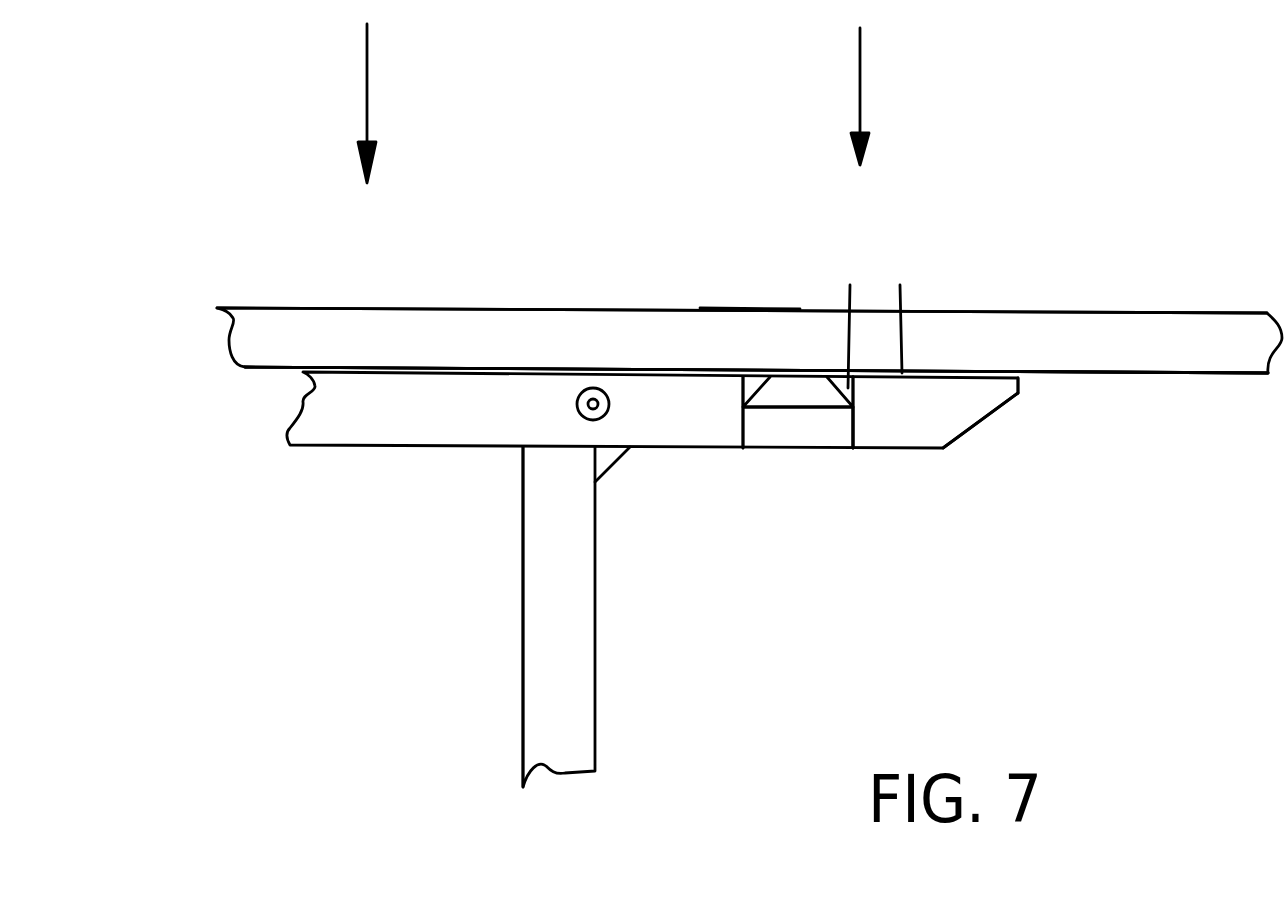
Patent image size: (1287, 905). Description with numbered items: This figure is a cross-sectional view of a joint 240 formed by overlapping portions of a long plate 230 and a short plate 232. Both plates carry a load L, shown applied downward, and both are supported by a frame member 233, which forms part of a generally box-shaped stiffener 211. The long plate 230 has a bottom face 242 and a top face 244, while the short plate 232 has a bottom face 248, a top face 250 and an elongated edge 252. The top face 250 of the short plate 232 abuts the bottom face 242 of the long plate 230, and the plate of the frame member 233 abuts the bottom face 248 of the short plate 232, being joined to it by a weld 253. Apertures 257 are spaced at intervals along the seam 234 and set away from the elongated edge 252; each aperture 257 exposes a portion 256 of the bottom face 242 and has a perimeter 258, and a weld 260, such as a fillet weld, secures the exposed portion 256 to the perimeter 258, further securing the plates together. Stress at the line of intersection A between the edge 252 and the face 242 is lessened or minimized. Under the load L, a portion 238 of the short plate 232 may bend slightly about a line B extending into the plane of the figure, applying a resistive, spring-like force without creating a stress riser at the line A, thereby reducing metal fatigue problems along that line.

The load L is at (367, 107).
The stiffener 211 is at (612, 730).
The long plate 230 is at (1010, 328).
The short plate 232 is at (418, 425).
The frame member 233 is at (577, 625).
The seam 234 is at (752, 285).
The portion of the plate 238 is at (863, 447).
The joint 240 is at (576, 258).
The bottom face 242 is at (1157, 373).
The top face 244 is at (1140, 313).
The bottom face 248 is at (900, 447).
The top face 250 is at (900, 285).
The elongated edge 252 is at (1018, 378).
The weld 253 is at (613, 468).
The exposed portion 256 is at (797, 377).
The aperture 257 is at (743, 420).
The perimeter 258 is at (853, 420).
The weld 260 is at (850, 285).
The line of intersection A is at (1022, 395).
The line B is at (593, 404).